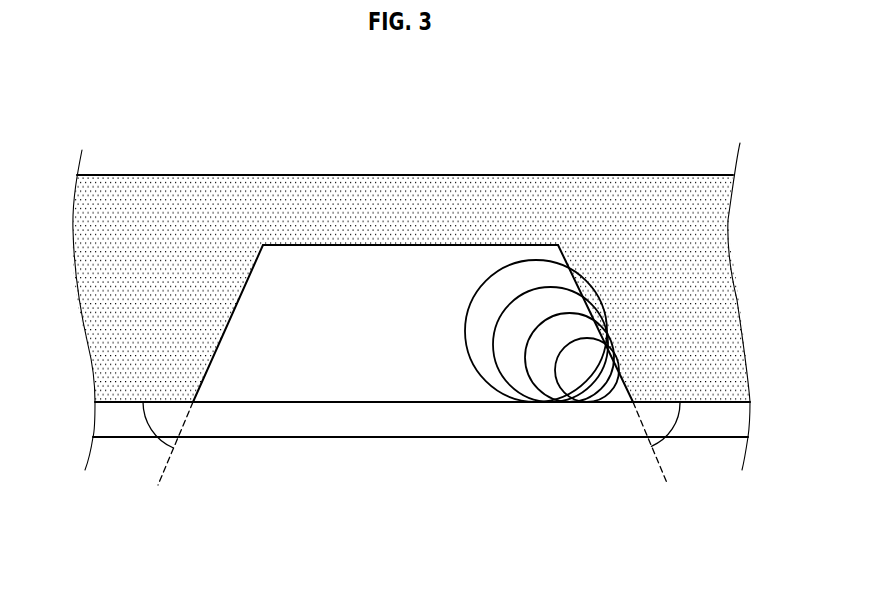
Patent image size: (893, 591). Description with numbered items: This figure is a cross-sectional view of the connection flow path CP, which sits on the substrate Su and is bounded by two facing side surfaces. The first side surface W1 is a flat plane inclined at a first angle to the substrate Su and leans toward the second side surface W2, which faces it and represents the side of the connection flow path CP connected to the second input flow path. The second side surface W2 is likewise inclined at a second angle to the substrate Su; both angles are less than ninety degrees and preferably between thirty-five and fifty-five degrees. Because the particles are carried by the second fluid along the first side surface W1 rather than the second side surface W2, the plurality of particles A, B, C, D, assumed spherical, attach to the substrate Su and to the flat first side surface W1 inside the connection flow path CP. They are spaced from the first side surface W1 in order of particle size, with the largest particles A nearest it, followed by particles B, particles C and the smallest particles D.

The connection flow path CP is at (382, 297).
The first side surface W1 is at (580, 293).
The second side surface W2 is at (230, 323).
The substrate Su is at (345, 418).
The particles A is at (480, 345).
The particles B is at (515, 365).
The particles C is at (548, 375).
The particles D is at (587, 383).